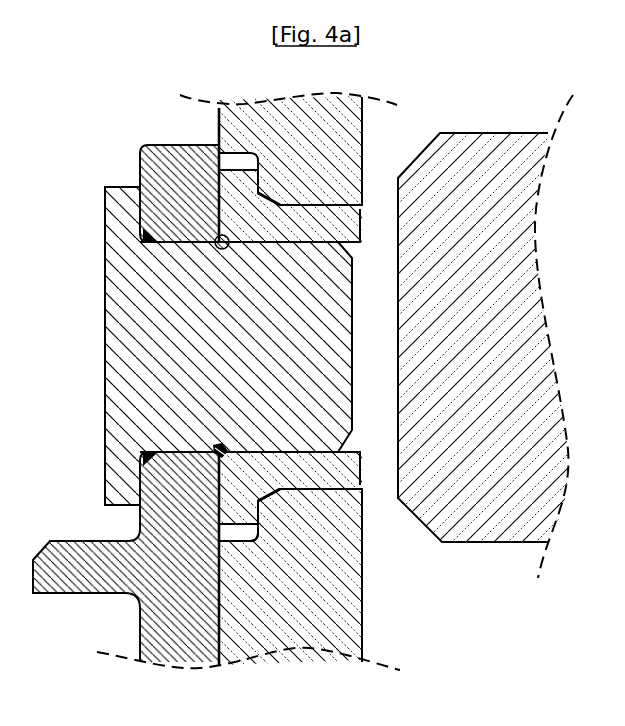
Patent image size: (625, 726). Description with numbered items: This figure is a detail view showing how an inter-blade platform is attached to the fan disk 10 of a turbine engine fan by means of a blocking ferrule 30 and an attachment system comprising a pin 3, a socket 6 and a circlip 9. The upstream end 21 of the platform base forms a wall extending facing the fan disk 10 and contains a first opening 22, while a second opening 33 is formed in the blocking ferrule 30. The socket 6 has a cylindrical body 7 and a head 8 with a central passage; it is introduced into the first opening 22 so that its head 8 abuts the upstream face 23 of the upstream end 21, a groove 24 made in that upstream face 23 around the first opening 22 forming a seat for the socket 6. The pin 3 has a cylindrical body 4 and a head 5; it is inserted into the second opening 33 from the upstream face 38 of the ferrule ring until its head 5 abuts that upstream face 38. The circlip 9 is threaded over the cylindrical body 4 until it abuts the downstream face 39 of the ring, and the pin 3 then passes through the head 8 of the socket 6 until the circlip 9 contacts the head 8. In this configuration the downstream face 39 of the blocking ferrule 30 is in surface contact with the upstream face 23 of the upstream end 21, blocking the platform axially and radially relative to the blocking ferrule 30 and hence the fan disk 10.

The pin 3 is at (228, 346).
The cylindrical body 4 is at (337, 383).
The head 5 is at (126, 483).
The socket 6 is at (300, 220).
The cylindrical body 7 is at (352, 224).
The head 8 is at (223, 173).
The circlip 9 is at (214, 446).
The fan disk 10 is at (485, 336).
The upstream end 21 is at (290, 380).
The first opening 22 is at (365, 208).
The upstream face 23 is at (216, 130).
The groove 24 is at (238, 532).
The blocking ferrule 30 is at (126, 403).
The second opening 33 is at (185, 245).
The upstream face 38 is at (140, 169).
The downstream face 39 is at (221, 612).